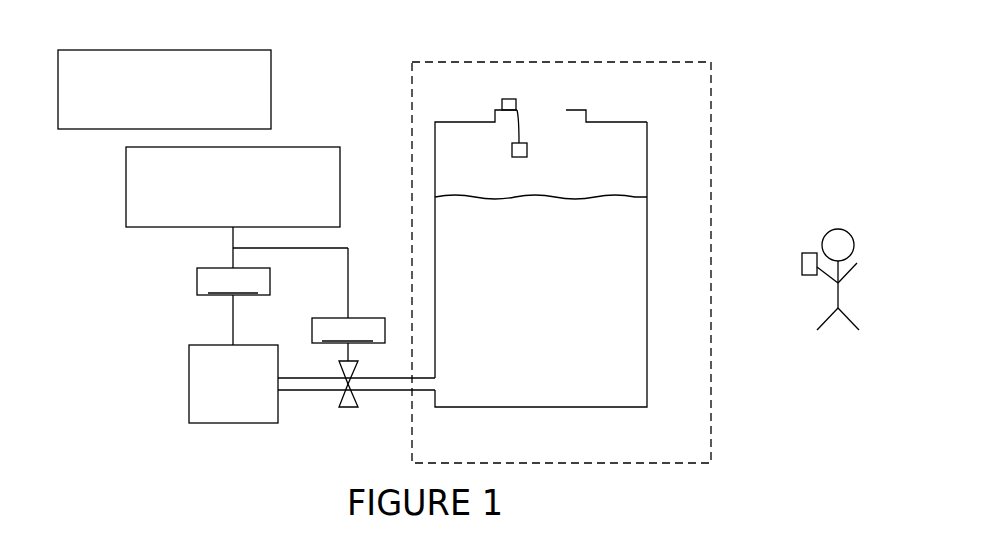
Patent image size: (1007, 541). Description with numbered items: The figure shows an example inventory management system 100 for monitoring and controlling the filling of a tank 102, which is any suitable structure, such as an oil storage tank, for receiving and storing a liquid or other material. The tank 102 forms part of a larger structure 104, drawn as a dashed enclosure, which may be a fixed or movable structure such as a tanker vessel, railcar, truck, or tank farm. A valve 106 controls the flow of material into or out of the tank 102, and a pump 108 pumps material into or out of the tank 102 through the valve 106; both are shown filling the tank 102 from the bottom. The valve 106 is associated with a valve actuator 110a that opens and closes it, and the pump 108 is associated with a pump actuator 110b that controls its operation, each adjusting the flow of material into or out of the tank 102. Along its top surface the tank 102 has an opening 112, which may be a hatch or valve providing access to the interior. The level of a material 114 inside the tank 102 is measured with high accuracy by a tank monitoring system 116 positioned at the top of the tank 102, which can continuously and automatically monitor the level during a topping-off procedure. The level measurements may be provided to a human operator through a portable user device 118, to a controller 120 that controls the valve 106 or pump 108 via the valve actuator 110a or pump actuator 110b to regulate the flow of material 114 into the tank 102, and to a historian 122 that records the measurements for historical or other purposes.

The inventory management system 100 is at (443, 276).
The tank 102 is at (557, 408).
The larger structure 104 is at (636, 464).
The valve 106 is at (350, 410).
The pump 108 is at (220, 425).
The valve actuator 110a is at (348, 330).
The pump actuator 110b is at (233, 281).
The opening 112 is at (545, 119).
The material 114 is at (620, 239).
The tank monitoring system 116 is at (520, 111).
The user device 118 is at (810, 252).
The controller 120 is at (170, 230).
The historian 122 is at (98, 133).